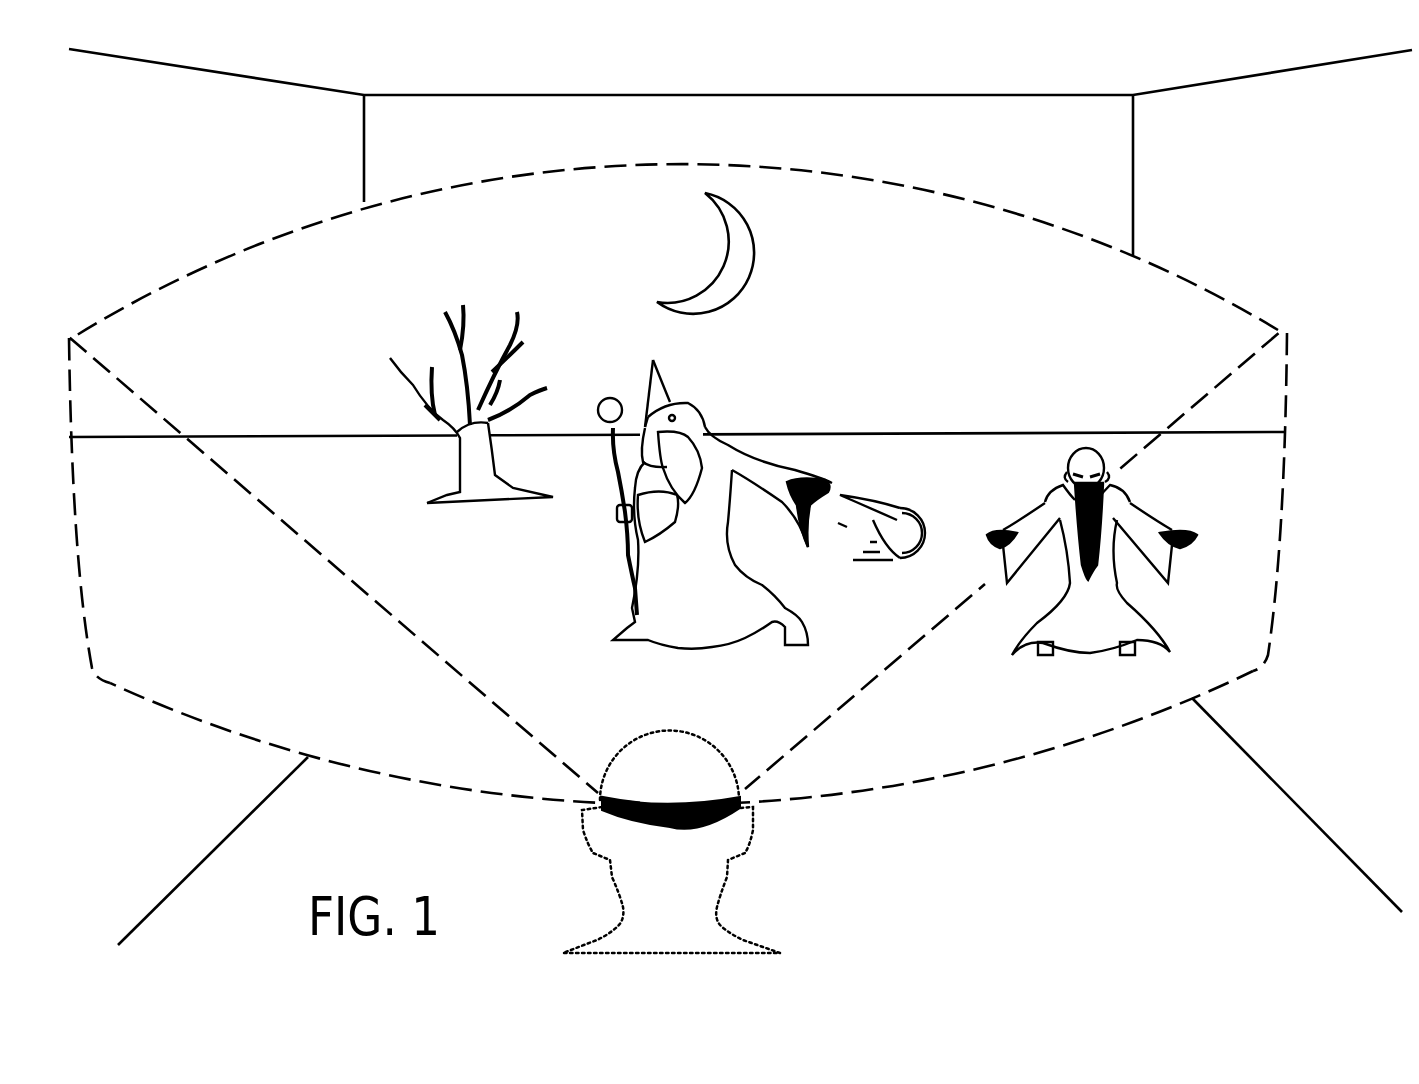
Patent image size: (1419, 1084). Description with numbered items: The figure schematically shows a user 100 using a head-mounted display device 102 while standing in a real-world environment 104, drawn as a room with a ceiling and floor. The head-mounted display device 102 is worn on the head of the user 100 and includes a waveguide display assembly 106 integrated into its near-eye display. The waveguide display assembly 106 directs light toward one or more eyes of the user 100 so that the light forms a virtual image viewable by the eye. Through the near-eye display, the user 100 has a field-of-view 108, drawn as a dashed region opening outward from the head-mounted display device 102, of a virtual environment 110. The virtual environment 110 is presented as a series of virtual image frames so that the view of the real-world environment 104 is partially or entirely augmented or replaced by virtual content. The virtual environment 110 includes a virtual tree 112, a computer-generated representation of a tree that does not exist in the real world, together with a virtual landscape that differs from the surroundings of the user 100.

The user 100 is at (690, 786).
The head-mounted display device 102 is at (770, 831).
The real-world environment 104 is at (214, 116).
The waveguide display assembly 106 is at (600, 797).
The field-of-view 108 is at (228, 250).
The virtual environment 110 is at (213, 375).
The virtual tree 112 is at (460, 484).